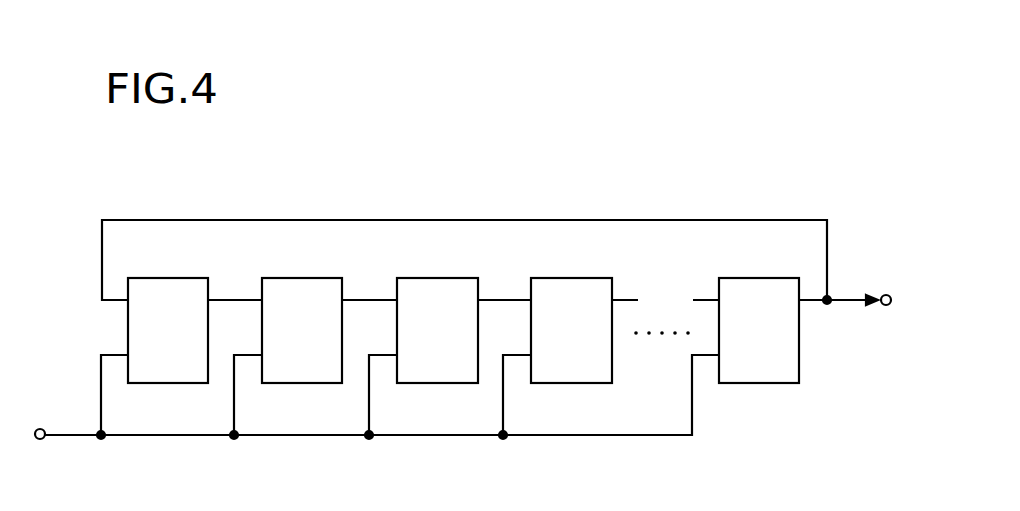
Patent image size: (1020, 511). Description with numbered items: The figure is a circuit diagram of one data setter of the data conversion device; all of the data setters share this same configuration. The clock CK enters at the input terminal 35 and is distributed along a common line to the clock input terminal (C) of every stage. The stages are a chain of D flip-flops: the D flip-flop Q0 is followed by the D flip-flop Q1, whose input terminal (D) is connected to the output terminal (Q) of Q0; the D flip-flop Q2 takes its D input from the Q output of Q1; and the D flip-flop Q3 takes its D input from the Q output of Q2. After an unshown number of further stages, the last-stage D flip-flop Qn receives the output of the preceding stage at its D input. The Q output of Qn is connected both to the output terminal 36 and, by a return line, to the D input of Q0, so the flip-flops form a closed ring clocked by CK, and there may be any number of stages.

The input terminal 35 is at (40, 429).
The output terminal 36 is at (886, 305).
The D flip-flop Q0 is at (168, 278).
The D flip-flop Q1 is at (301, 278).
The D flip-flop Q2 is at (434, 278).
The D flip-flop Q3 is at (568, 278).
The last-stage D flip-flop Qn is at (757, 278).